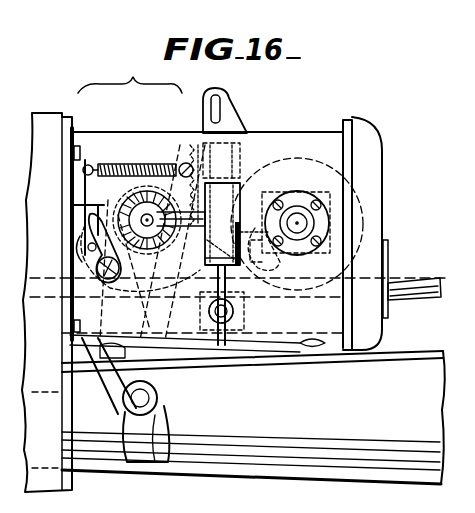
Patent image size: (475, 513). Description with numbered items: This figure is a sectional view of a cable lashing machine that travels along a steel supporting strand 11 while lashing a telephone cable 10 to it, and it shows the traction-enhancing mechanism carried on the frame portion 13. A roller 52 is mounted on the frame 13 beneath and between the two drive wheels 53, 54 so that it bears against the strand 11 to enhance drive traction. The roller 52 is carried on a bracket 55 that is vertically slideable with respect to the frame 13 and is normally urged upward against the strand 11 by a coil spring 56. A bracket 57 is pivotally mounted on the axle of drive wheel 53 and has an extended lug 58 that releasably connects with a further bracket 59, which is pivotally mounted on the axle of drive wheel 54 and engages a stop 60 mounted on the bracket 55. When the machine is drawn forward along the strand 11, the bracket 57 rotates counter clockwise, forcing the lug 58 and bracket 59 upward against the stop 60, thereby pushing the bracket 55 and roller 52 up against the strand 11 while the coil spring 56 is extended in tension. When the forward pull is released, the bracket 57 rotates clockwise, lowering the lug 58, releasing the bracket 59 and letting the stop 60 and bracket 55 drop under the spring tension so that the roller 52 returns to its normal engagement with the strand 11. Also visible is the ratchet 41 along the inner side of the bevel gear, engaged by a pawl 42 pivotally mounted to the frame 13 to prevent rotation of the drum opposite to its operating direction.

The telephone cable 10 is at (400, 360).
The strand 11 is at (410, 288).
The frame portion 13 is at (130, 75).
The ratchet 41 is at (140, 238).
The pawl 42 is at (86, 181).
The roller 52 is at (245, 311).
The drive wheel 53 is at (118, 158).
The drive wheel 54 is at (304, 160).
The bracket 55 is at (200, 311).
The coil spring 56 is at (240, 148).
The bracket 57 is at (148, 150).
The lug 58 is at (272, 266).
The bracket 59 is at (297, 213).
The stop 60 is at (290, 216).